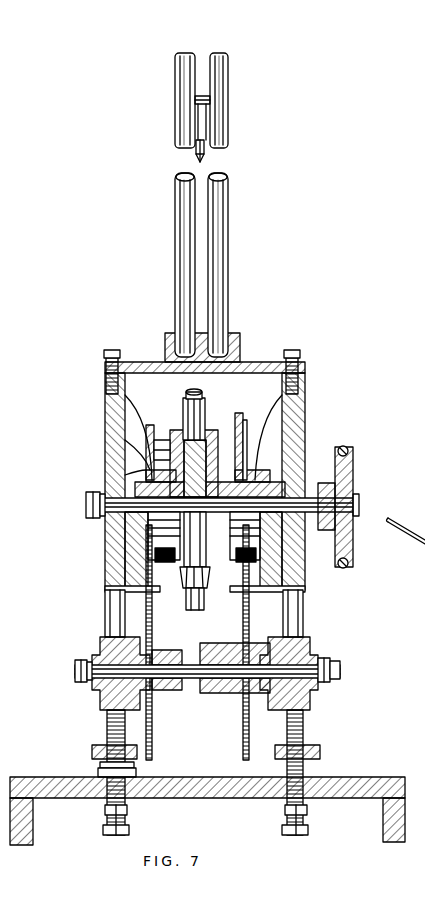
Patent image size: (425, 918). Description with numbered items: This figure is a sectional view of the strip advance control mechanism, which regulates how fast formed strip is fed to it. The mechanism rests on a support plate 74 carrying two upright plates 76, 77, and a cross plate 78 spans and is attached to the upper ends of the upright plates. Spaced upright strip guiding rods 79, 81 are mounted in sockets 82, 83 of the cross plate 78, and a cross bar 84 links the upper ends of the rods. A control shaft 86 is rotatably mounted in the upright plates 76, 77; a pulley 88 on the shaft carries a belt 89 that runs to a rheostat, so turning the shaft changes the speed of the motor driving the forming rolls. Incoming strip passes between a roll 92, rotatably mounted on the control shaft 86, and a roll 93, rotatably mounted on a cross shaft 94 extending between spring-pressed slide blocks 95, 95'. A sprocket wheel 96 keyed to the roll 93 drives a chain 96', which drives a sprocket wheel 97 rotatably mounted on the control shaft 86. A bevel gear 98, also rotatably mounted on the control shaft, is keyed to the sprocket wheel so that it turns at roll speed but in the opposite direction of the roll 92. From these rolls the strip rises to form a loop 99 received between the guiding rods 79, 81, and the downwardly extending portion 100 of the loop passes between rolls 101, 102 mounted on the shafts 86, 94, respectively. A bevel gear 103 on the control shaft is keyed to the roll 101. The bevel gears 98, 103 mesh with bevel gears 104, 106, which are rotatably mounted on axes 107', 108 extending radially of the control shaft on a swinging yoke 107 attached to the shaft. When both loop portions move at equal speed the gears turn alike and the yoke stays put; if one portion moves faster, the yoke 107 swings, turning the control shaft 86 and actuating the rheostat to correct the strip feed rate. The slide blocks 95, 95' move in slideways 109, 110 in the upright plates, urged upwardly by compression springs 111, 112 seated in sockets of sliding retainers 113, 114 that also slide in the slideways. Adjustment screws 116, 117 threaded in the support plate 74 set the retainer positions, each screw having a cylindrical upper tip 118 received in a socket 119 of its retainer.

The support plate 74 is at (350, 785).
The upright plate 76 is at (112, 430).
The upright plate 77 is at (300, 425).
The cross plate 78 is at (246, 362).
The strip guiding rod 79 is at (183, 54).
The strip guiding rod 81 is at (225, 75).
The socket 82 is at (186, 345).
The socket 83 is at (220, 342).
The cross bar 84 is at (207, 104).
The control shaft 86 is at (358, 510).
The pulley 88 is at (353, 480).
The belt 89 is at (346, 450).
The roll 92 is at (248, 459).
The roll 93 is at (248, 612).
The cross shaft 94 is at (341, 670).
The slide block 95 is at (104, 665).
The slide block 95' is at (311, 664).
The sprocket wheel 96 is at (211, 663).
The chain 96' is at (257, 541).
The sprocket wheel 97 is at (248, 441).
The bevel gear 98 is at (240, 428).
The loop 99 is at (205, 152).
The downwardly extending portion 100 is at (150, 580).
The roll 101 is at (202, 372).
The roll 102 is at (152, 745).
The bevel gear 103 is at (152, 442).
The bevel gear 104 is at (205, 435).
The bevel gear 106 is at (156, 562).
The swinging yoke 107 is at (101, 480).
The axis 107' is at (185, 407).
The axis 108 is at (210, 628).
The slideway 109 is at (112, 605).
The slideway 110 is at (303, 600).
The compression spring 111 is at (106, 720).
The compression spring 112 is at (303, 718).
The sliding retainer 113 is at (92, 752).
The sliding retainer 114 is at (318, 752).
The adjustment screw 116 is at (126, 820).
The adjustment screw 117 is at (304, 820).
The cylindrical upper tip 118 is at (126, 762).
The socket 119 is at (106, 770).